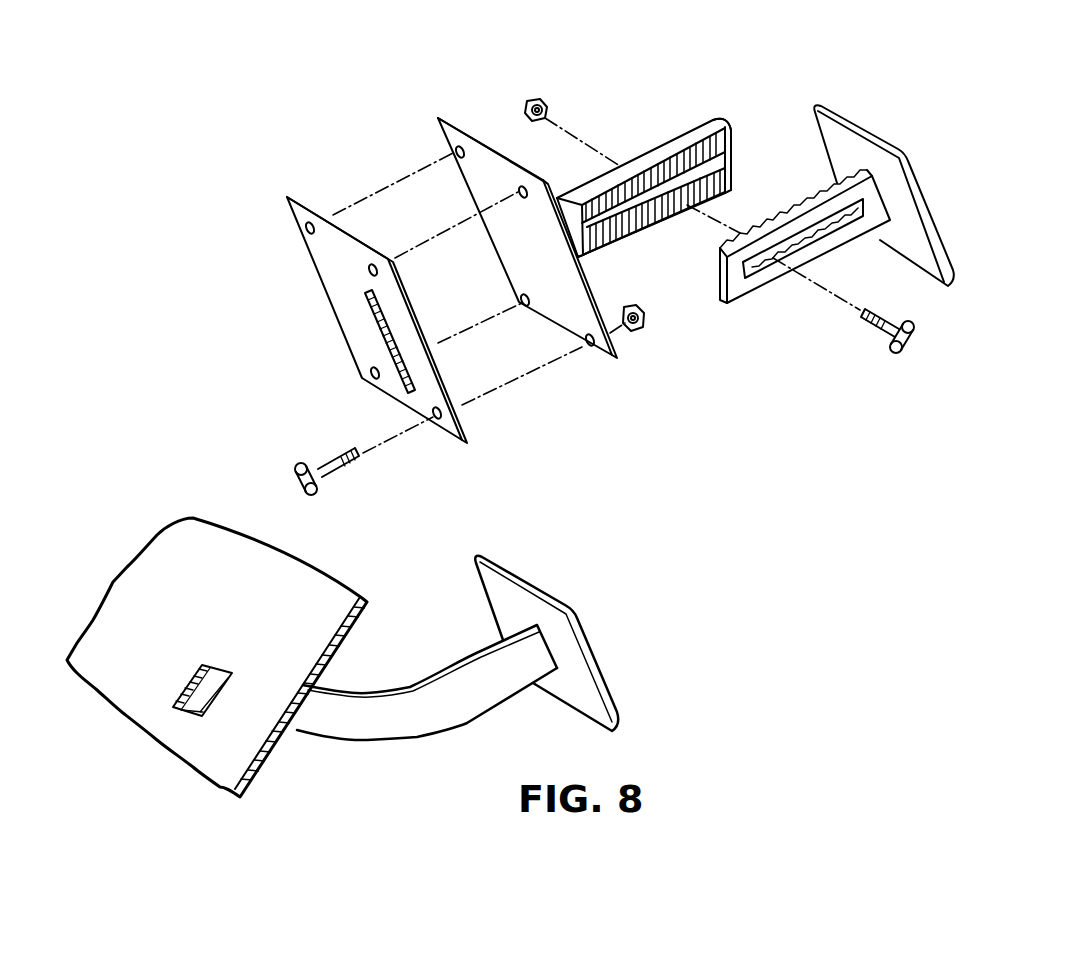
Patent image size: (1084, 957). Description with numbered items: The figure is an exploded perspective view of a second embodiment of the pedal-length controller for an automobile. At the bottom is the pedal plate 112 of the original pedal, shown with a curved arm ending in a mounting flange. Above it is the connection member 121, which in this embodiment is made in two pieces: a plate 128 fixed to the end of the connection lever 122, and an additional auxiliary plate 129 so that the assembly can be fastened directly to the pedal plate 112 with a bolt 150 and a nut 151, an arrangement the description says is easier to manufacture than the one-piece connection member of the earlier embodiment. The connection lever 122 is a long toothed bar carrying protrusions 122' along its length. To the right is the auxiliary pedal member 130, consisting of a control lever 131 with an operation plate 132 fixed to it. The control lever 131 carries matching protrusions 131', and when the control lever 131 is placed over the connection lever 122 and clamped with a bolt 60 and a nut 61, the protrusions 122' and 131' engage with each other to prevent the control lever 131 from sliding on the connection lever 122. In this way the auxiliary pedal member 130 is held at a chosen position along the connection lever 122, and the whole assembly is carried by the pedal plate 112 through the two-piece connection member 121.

The bolt 60 is at (884, 342).
The nut 61 is at (540, 97).
The pedal plate 112 is at (610, 693).
The connection member 121 is at (422, 128).
The connection lever 122 is at (644, 171).
The protrusions 122' is at (725, 118).
The plate 128 is at (473, 181).
The auxiliary plate 129 is at (310, 258).
The auxiliary pedal member 130 is at (867, 124).
The control lever 131 is at (805, 264).
The protrusions 131' is at (793, 190).
The operation plate 132 is at (938, 226).
The bolt 150 is at (323, 462).
The nut 151 is at (643, 333).